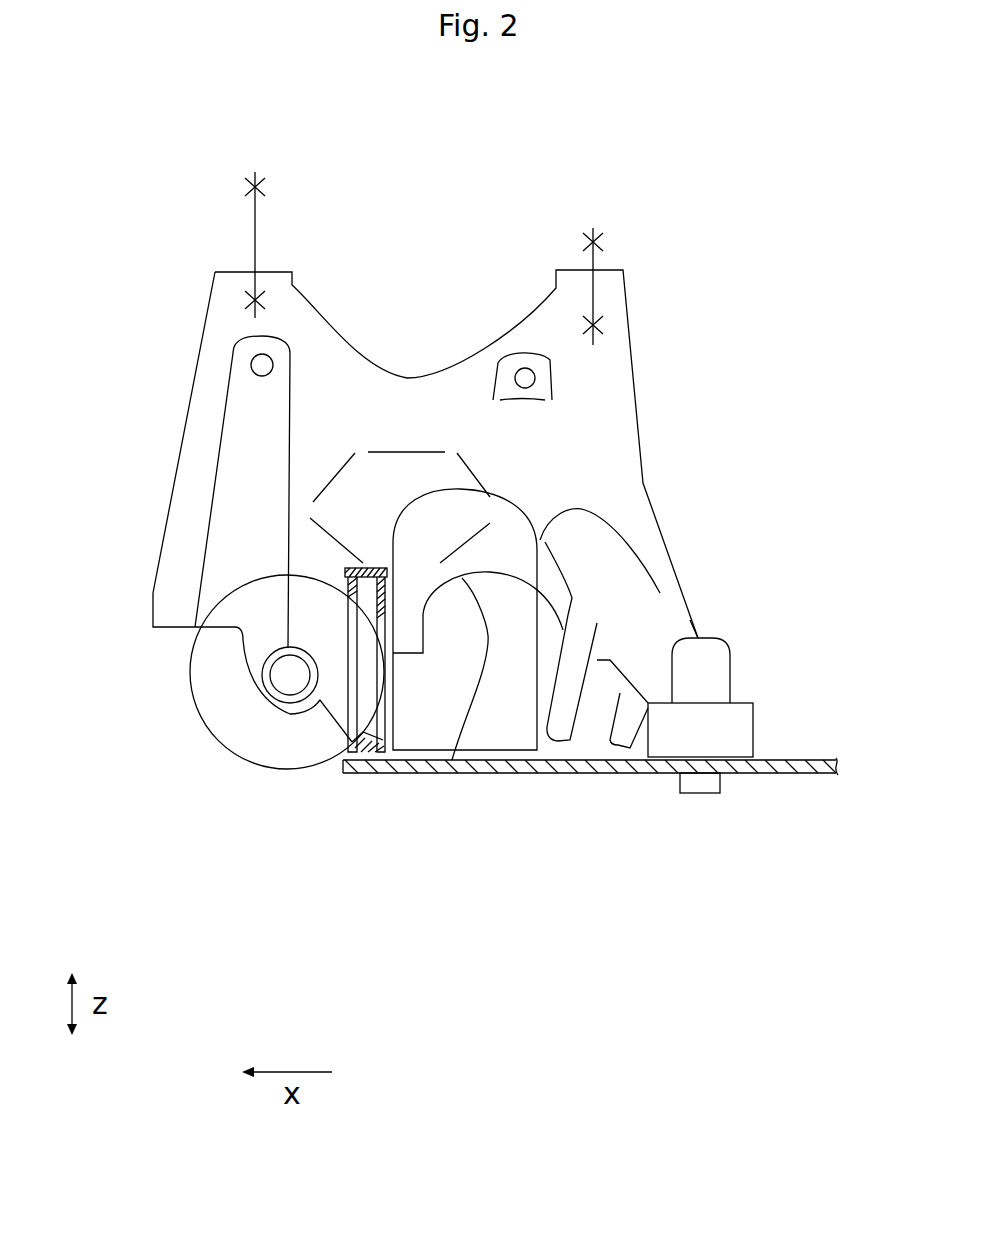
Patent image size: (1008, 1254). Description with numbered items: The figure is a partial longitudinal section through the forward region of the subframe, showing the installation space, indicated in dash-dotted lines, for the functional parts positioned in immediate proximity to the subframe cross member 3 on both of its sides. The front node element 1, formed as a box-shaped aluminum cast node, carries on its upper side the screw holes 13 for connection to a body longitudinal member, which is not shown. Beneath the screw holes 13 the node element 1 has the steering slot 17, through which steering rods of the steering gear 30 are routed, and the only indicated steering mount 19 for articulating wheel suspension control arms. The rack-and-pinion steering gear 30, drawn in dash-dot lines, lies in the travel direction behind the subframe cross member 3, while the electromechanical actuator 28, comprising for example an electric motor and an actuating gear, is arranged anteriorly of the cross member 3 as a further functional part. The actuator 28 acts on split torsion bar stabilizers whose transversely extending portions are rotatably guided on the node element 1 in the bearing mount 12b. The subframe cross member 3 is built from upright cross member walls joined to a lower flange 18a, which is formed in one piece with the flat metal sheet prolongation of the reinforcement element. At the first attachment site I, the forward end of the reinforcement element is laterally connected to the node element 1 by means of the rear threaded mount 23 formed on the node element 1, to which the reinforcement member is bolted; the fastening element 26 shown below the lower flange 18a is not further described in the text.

The front node element 1 is at (203, 252).
The subframe cross member 3 is at (373, 556).
The bearing mount 12b is at (270, 690).
The screw hole 13 is at (255, 205).
The steering slot 17 is at (452, 760).
The lower flange 18a is at (358, 773).
The steering mount 19 is at (553, 742).
The rear threaded mount 23 is at (733, 673).
The fastening nut 26 is at (700, 793).
The electromechanical actuator 28 is at (185, 672).
The steering gear 30 is at (540, 545).
The first attachment site I is at (715, 622).